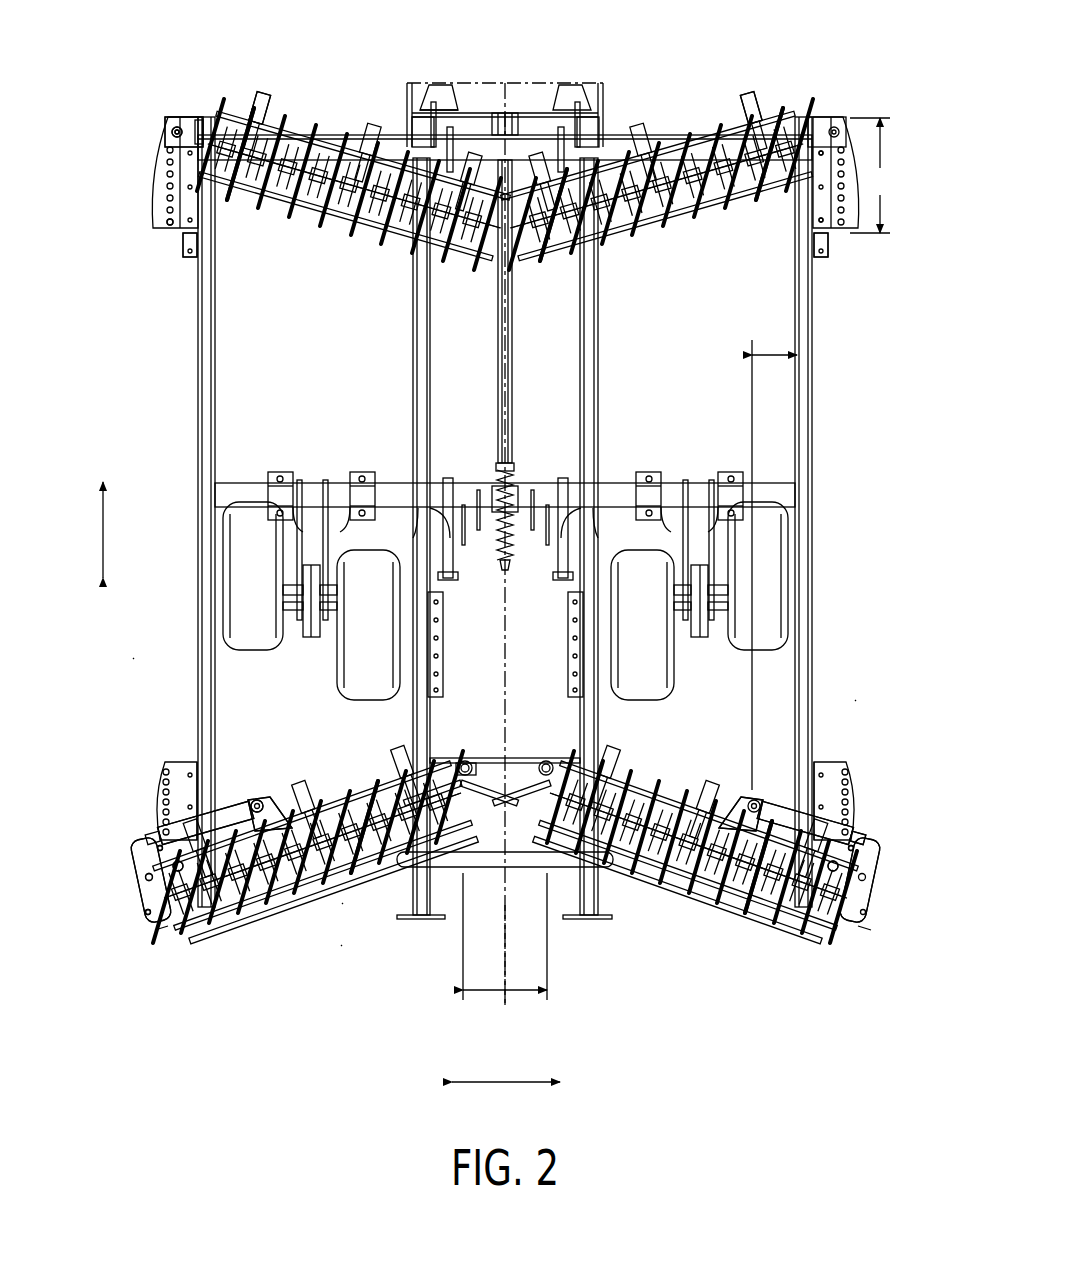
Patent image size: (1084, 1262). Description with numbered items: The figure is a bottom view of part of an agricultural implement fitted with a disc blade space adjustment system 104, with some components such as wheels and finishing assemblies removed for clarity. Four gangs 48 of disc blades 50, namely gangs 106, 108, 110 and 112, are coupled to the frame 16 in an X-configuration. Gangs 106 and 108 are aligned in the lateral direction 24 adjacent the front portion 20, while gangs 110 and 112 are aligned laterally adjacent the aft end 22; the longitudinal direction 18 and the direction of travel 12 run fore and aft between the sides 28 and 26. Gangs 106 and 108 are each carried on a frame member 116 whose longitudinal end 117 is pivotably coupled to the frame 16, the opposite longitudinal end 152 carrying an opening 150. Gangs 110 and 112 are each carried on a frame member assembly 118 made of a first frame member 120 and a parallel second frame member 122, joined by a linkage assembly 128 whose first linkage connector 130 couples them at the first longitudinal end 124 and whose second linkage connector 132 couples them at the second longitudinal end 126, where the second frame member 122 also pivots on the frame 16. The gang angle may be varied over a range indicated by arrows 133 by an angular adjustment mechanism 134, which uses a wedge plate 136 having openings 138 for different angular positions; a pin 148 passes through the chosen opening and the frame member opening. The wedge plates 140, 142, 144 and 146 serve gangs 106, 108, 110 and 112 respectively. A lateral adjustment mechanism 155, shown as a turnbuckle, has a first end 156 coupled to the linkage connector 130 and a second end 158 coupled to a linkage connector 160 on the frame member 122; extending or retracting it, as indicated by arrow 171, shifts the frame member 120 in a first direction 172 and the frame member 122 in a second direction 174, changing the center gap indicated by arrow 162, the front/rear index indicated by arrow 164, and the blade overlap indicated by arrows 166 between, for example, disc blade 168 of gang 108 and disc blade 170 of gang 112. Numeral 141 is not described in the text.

The direction of travel 12 is at (505, 12).
The frame 16 is at (618, 134).
The longitudinal direction 18 is at (116, 527).
The front portion 20 is at (390, 95).
The aft end 22 is at (342, 944).
The lateral direction 24 is at (503, 1078).
The side 26 is at (856, 700).
The side 28 is at (132, 660).
The gangs 48 is at (260, 100).
The disc blades 50 is at (284, 120).
The disc blade space adjustment system 104 is at (113, 854).
The gang 106 is at (314, 122).
The gang 108 is at (655, 134).
The gang 110 is at (300, 772).
The gang 112 is at (636, 772).
The frame member 116 is at (234, 100).
The longitudinal end 117 is at (548, 268).
The frame member assembly 118 is at (162, 932).
The first frame member 120 is at (157, 922).
The second frame member 122 is at (288, 826).
The first longitudinal end 124 is at (138, 882).
The second longitudinal end 126 is at (466, 757).
The linkage assembly 128 is at (142, 925).
The first linkage connector 130 is at (145, 860).
The second linkage connector 132 is at (470, 780).
The arrows 133 is at (862, 803).
The angular adjustment mechanism 134 is at (170, 124).
The wedge plate 136 is at (160, 186).
The openings 138 is at (166, 230).
The wedge plate 140 is at (186, 240).
The centerline reference 141 is at (504, 918).
The wedge plate 142 is at (848, 245).
The wedge plate 144 is at (162, 762).
The wedge plate 146 is at (858, 762).
The pin 148 is at (177, 128).
The opening 150 is at (200, 125).
The longitudinal end 152 is at (162, 132).
The lateral adjustment mechanism 155 is at (788, 810).
The first end 156 is at (855, 836).
The second end 158 is at (738, 802).
The linkage connector 160 is at (262, 793).
The arrow 162 is at (492, 995).
The arrow 164 is at (426, 306).
The arrows 166 is at (798, 360).
The disc blade 168 is at (829, 215).
The disc blade 170 is at (842, 926).
The arrow 171 is at (254, 804).
The first direction 172 is at (388, 786).
The second direction 174 is at (315, 918).